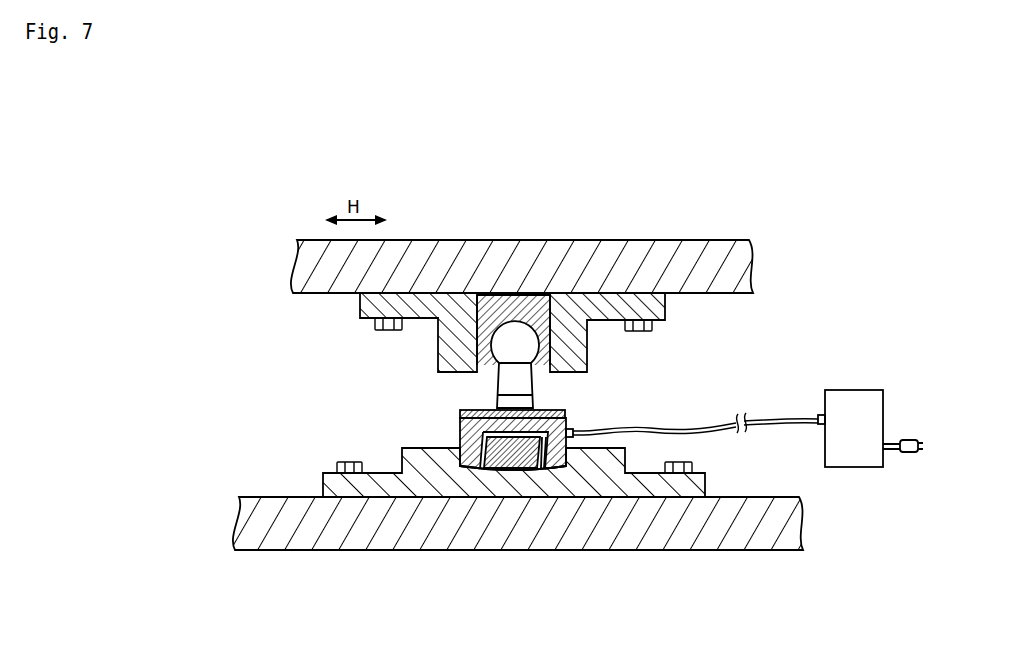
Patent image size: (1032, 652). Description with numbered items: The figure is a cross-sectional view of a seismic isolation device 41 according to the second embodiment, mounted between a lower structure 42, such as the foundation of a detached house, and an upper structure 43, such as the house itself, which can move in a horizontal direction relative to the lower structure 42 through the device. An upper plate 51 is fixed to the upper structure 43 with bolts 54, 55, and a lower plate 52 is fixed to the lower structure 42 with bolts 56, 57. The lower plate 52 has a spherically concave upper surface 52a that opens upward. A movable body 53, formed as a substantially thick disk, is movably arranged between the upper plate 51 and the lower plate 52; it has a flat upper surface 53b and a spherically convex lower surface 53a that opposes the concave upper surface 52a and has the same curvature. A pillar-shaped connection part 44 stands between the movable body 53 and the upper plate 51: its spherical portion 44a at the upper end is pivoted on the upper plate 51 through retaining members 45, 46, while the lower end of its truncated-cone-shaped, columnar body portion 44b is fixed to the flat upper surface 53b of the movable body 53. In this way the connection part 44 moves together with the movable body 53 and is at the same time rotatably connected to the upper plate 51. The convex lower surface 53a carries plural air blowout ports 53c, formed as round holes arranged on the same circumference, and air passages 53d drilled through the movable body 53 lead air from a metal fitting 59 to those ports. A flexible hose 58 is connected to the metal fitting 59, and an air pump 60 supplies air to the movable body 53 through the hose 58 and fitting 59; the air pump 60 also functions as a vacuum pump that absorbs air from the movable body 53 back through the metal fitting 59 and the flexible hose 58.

The seismic isolation device 41 is at (285, 373).
The lower structure 42 is at (755, 551).
The upper structure 43 is at (704, 240).
The pillar-shaped connection part 44 is at (530, 380).
The spherical portion 44a is at (503, 330).
The body portion 44b is at (533, 395).
The retaining member 45 is at (548, 300).
The retaining member 46 is at (497, 366).
The upper plate 51 is at (607, 294).
The lower plate 52 is at (446, 480).
The spherically concave upper surface 52a is at (590, 455).
The movable body 53 is at (460, 428).
The spherically convex lower surface 53a is at (531, 480).
The flat upper surface 53b is at (459, 412).
The air blowout port 53c is at (489, 470).
The air passage 53d is at (549, 470).
The bolt 54 is at (375, 324).
The bolt 55 is at (643, 331).
The bolt 56 is at (338, 465).
The bolt 57 is at (678, 460).
The flexible hose 58 is at (800, 424).
The metal fitting 59 is at (574, 421).
The air pump 60 is at (848, 390).